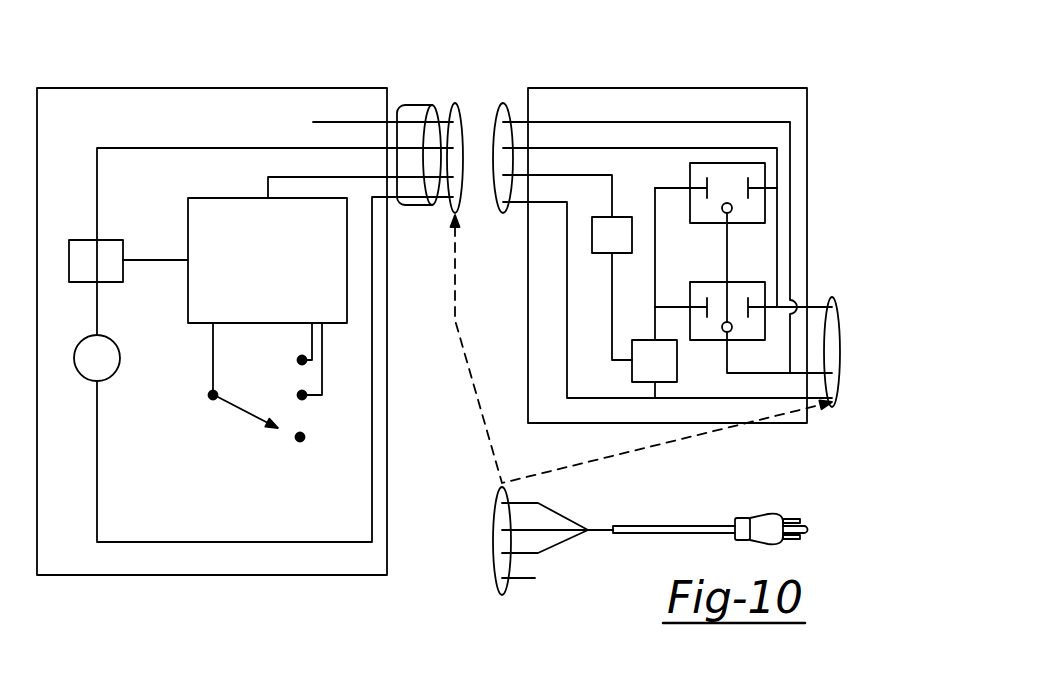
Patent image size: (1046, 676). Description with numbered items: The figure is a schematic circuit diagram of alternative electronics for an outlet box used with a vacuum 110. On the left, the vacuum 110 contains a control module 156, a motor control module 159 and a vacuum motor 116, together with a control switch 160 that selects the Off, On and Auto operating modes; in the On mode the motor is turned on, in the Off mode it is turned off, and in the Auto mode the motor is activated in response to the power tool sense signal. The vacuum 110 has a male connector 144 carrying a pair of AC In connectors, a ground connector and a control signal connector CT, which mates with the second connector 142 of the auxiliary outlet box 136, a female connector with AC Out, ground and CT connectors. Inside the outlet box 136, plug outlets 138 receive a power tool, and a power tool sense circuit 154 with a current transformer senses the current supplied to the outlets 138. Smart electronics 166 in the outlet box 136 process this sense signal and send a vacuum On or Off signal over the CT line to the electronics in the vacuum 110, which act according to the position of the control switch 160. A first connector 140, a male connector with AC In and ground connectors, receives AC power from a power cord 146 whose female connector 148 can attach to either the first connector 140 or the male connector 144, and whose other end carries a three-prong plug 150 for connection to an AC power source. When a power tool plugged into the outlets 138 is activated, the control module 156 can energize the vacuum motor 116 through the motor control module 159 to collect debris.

The vacuum 110 is at (125, 87).
The vacuum motor 116 is at (117, 370).
The auxiliary outlet box 136 is at (752, 87).
The plug outlet 138 is at (713, 212).
The first connector 140 is at (835, 280).
The second connector 142 is at (503, 227).
The male connector 144 is at (440, 90).
The power cord 146 is at (655, 525).
The female connector 148 is at (557, 569).
The plug 150 is at (773, 515).
The power tool sense circuit 154 is at (643, 338).
The control module 156 is at (217, 198).
The motor control module 159 is at (80, 240).
The control switch 160 is at (243, 413).
The smart electronics 166 is at (622, 217).